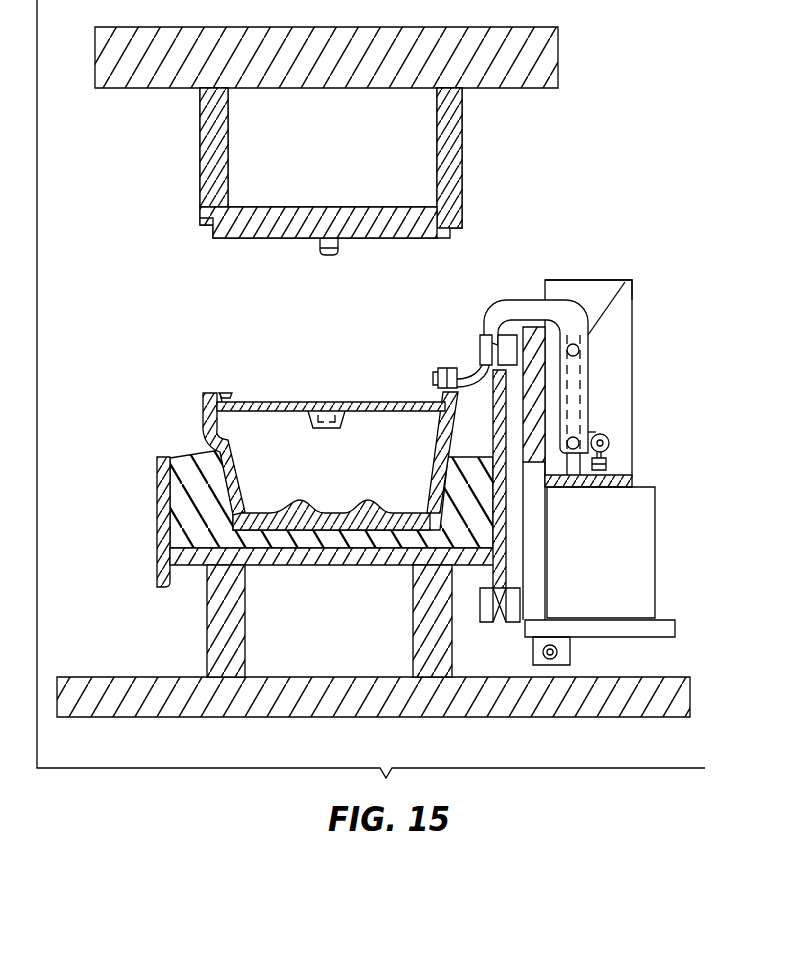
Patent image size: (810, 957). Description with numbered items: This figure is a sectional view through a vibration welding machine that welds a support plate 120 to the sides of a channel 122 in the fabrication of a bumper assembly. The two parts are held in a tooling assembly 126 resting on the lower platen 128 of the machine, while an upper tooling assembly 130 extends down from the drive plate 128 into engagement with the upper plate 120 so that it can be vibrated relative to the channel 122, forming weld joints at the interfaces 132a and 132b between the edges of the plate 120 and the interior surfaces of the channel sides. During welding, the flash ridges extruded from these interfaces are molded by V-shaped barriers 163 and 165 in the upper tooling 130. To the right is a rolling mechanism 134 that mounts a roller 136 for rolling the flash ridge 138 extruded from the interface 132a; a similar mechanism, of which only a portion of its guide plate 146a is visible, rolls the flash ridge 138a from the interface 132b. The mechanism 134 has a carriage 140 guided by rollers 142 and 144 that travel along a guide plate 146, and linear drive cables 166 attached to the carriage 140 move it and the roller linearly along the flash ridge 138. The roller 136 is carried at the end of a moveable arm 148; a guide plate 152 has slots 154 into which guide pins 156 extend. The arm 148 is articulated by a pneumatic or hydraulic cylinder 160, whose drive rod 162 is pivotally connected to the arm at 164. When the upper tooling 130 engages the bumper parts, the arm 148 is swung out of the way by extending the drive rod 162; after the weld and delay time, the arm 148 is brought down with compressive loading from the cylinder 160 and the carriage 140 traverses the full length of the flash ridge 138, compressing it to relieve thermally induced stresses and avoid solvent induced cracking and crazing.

The support plate 120 is at (293, 434).
The channel 122 is at (240, 478).
The tooling assembly 126 is at (340, 622).
The lower platen 128 is at (558, 50).
The upper tooling assembly 130 is at (343, 181).
The interface 132a is at (444, 432).
The interface 132b is at (202, 416).
The rolling mechanism 134 is at (502, 292).
The roller 136 is at (447, 368).
The flash ridge 138 is at (433, 376).
The flash ridge 138a is at (222, 393).
The carriage 140 is at (645, 637).
The rollers 142 is at (484, 330).
The rollers 144 is at (497, 625).
The guide plate 146 is at (505, 486).
The guide plate 146a is at (156, 518).
The moveable arm 148 is at (555, 300).
The guide plate 152 is at (632, 337).
The slots 154 is at (632, 300).
The guide pins 156 is at (579, 440).
The cylinder 160 is at (655, 582).
The drive rod 162 is at (608, 464).
The V-shaped barrier 163 is at (440, 238).
The pivotal connection 164 is at (610, 438).
The V-shaped barrier 165 is at (208, 232).
The linear drive cables 166 is at (560, 650).